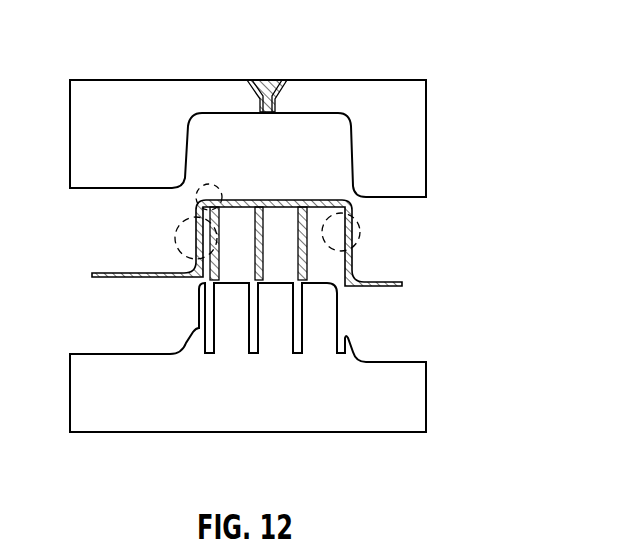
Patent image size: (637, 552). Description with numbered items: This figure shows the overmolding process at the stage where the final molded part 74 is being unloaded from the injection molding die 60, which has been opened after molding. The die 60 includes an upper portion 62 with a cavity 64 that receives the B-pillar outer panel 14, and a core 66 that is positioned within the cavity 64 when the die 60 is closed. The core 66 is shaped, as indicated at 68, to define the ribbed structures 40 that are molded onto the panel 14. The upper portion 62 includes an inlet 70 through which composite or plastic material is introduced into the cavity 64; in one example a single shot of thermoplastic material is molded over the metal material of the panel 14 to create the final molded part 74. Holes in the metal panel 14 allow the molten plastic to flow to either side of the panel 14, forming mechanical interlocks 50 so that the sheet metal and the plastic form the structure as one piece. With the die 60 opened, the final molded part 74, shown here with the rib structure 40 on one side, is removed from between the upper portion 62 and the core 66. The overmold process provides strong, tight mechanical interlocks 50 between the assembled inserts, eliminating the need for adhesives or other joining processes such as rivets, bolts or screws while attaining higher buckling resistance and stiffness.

The injection molding die 60 is at (460, 39).
The upper portion 62 is at (385, 164).
The cavity 64 is at (234, 150).
The core 66 is at (97, 418).
The shaped portion of core 68 is at (355, 321).
The inlet 70 is at (268, 83).
The B-pillar outer panel 14 is at (120, 272).
The ribbed structures 40 is at (208, 286).
The mechanical interlocks 50 is at (327, 225).
The final molded part 74 is at (354, 278).